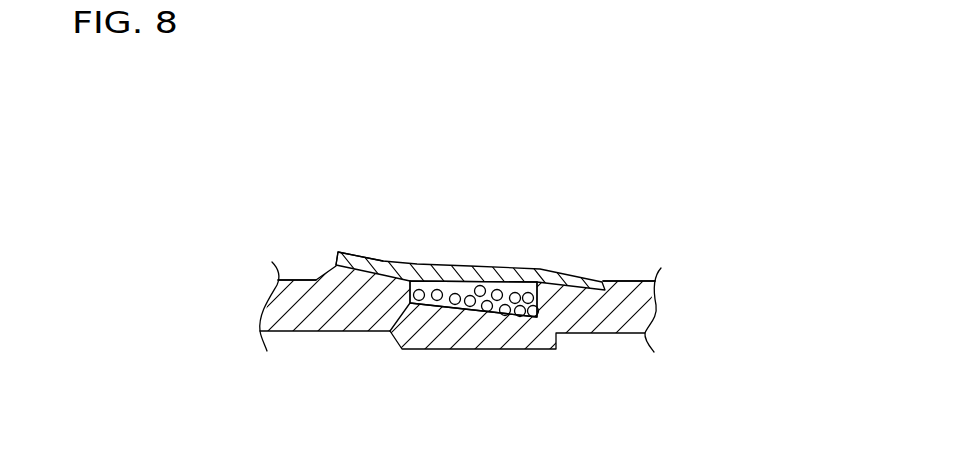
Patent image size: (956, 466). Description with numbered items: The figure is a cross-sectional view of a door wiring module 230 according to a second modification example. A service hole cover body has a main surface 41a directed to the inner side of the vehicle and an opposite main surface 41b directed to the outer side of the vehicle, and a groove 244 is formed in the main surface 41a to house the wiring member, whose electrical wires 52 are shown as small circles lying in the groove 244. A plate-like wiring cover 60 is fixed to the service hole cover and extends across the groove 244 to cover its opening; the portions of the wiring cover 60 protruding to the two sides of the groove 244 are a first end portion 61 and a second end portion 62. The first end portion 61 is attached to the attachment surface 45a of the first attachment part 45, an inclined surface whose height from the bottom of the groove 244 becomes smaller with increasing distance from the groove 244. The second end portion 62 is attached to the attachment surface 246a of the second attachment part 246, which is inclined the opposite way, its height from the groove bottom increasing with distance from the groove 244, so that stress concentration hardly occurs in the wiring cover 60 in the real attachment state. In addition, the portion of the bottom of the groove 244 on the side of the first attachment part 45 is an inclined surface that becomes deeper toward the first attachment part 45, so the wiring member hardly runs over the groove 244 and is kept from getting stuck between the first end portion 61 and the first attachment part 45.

The door wiring module 230 is at (300, 154).
The main surface of the cover body part 41a is at (298, 279).
The main surface of the service hole cover 41b is at (303, 332).
The first attachment part 45 is at (536, 296).
The attachment surface 45a is at (578, 280).
The second attachment part 246 is at (479, 246).
The attachment surface 246a is at (348, 255).
The second end portion 62 is at (389, 264).
The first end portion 61 is at (553, 278).
The wiring cover 60 is at (452, 256).
The groove 244 is at (483, 305).
The electrical wire 52 is at (499, 289).